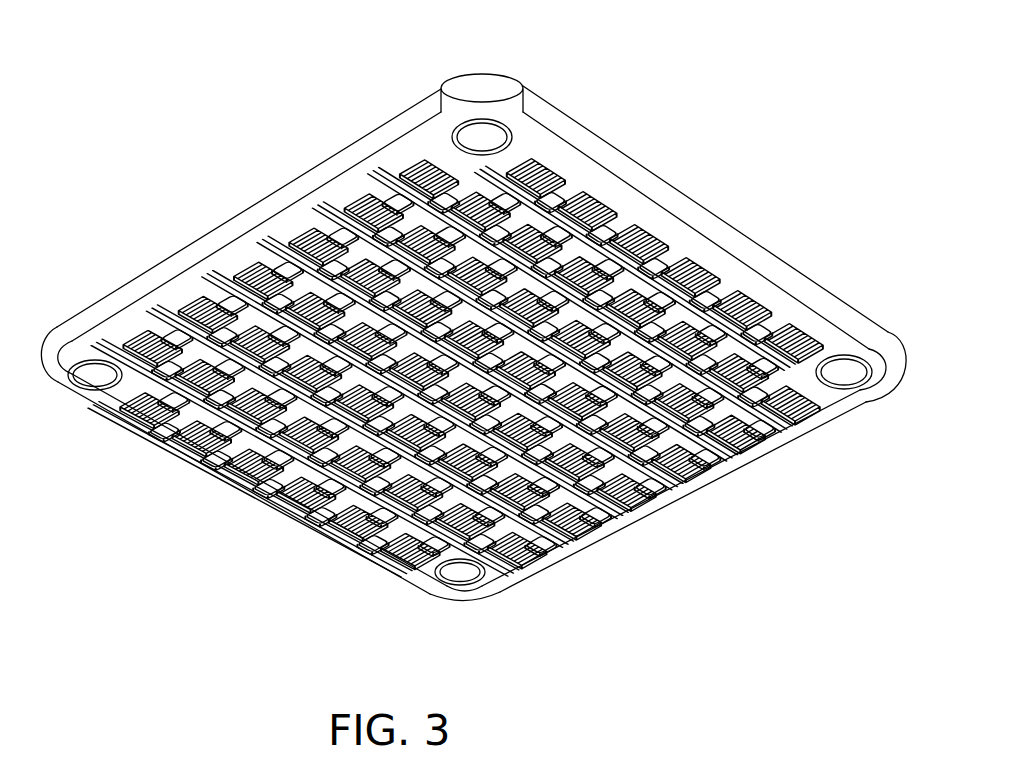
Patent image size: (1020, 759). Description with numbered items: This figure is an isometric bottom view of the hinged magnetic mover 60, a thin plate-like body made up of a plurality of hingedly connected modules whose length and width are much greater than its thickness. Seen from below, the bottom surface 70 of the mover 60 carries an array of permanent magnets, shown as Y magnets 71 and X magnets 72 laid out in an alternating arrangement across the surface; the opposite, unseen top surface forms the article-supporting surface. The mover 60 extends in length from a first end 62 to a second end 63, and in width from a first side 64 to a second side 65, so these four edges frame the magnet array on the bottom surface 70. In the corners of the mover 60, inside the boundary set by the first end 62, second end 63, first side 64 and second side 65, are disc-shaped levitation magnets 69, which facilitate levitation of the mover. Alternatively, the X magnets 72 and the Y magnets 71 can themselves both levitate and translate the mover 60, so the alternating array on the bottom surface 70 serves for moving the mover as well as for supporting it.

The mover 60 is at (465, 332).
The first end 62 is at (686, 218).
The second end 63 is at (97, 417).
The first side 64 is at (655, 513).
The second side 65 is at (266, 212).
The levitation magnets 69 is at (474, 136).
The bottom surface 70 is at (562, 183).
The Y magnets 71 is at (330, 517).
The X magnets 72 is at (466, 539).